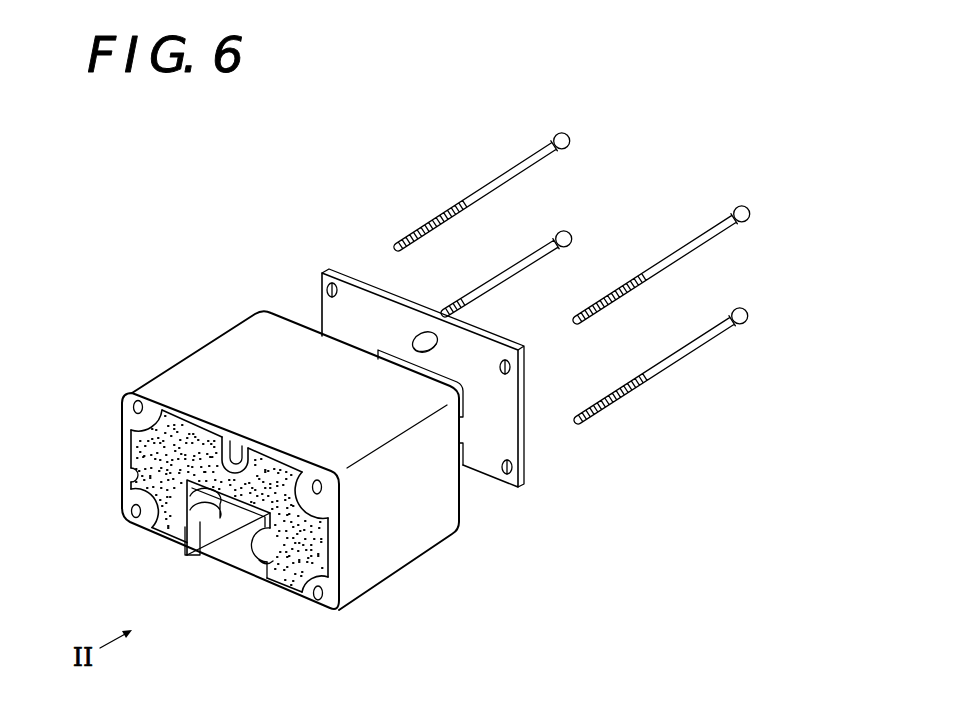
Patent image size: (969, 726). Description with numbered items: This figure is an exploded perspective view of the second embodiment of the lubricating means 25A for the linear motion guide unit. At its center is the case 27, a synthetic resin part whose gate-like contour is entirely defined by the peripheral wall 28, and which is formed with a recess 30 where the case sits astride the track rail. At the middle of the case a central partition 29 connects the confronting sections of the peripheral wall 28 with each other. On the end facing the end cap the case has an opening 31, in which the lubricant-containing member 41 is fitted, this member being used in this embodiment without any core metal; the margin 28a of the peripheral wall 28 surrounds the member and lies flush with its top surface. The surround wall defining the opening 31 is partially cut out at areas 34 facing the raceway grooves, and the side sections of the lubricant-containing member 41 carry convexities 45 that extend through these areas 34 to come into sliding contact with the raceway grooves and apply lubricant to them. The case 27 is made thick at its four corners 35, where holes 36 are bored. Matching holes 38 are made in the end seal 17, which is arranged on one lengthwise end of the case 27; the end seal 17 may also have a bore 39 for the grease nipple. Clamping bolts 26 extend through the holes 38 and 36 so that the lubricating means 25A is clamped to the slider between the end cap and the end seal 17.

The end seal 17 is at (377, 288).
The lubricating means 25A is at (505, 536).
The clamping bolts 26 is at (533, 158).
The case 27 is at (228, 320).
The peripheral wall 28 is at (128, 446).
The margin of the peripheral wall 28a is at (336, 558).
The central partition 29 is at (240, 452).
The recess 30 is at (227, 550).
The opening 31 is at (134, 479).
The cut-out areas 34 is at (198, 520).
The thick corners 35 is at (152, 402).
The holes 36 is at (138, 403).
The matching holes 38 is at (326, 287).
The bore for the grease nipple 39 is at (424, 331).
The lubricant-containing member 41 is at (188, 446).
The convexities 45 is at (225, 548).